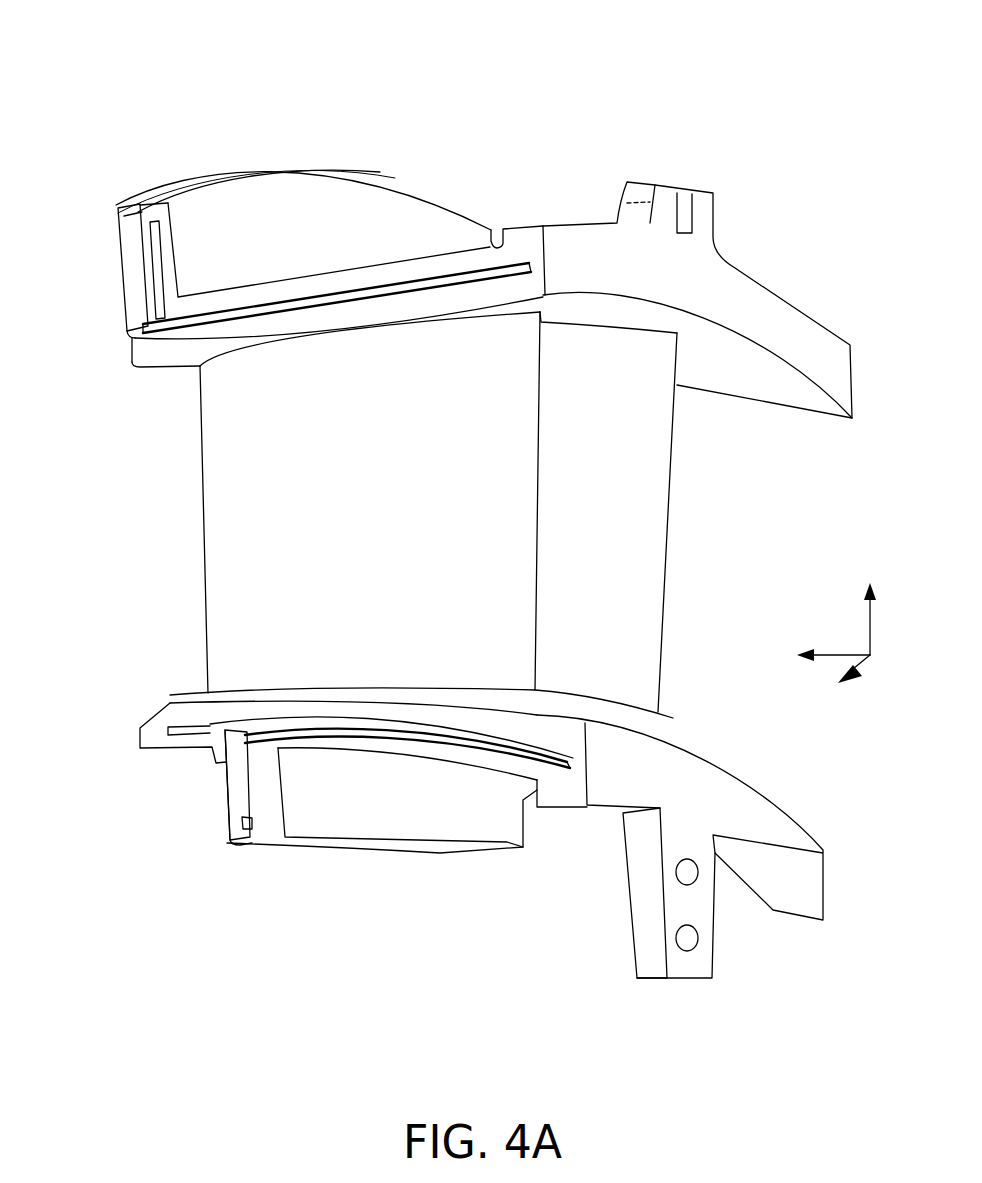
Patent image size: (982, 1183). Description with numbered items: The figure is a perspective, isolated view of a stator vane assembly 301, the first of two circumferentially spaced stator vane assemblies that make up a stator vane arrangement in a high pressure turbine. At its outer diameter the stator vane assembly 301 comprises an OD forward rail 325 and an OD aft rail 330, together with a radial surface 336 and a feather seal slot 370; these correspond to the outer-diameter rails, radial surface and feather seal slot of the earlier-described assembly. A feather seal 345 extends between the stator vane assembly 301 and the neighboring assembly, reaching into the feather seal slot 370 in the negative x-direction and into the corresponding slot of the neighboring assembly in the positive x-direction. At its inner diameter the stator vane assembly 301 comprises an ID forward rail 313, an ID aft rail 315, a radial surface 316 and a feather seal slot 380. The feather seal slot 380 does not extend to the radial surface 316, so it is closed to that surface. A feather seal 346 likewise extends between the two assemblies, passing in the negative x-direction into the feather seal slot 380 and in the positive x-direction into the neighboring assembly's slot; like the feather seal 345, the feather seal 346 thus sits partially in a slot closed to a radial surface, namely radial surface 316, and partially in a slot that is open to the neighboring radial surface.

The stator vane assembly 301 is at (773, 100).
The OD aft rail 330 is at (273, 212).
The radial surface 336 is at (180, 190).
The feather seal slot 370 is at (130, 222).
The feather seal 345 is at (137, 322).
The OD forward rail 325 is at (627, 261).
The feather seal slot 380 is at (213, 730).
The ID aft rail 315 is at (345, 811).
The radial surface 316 is at (292, 843).
The feather seal 346 is at (243, 827).
The ID forward rail 313 is at (594, 783).